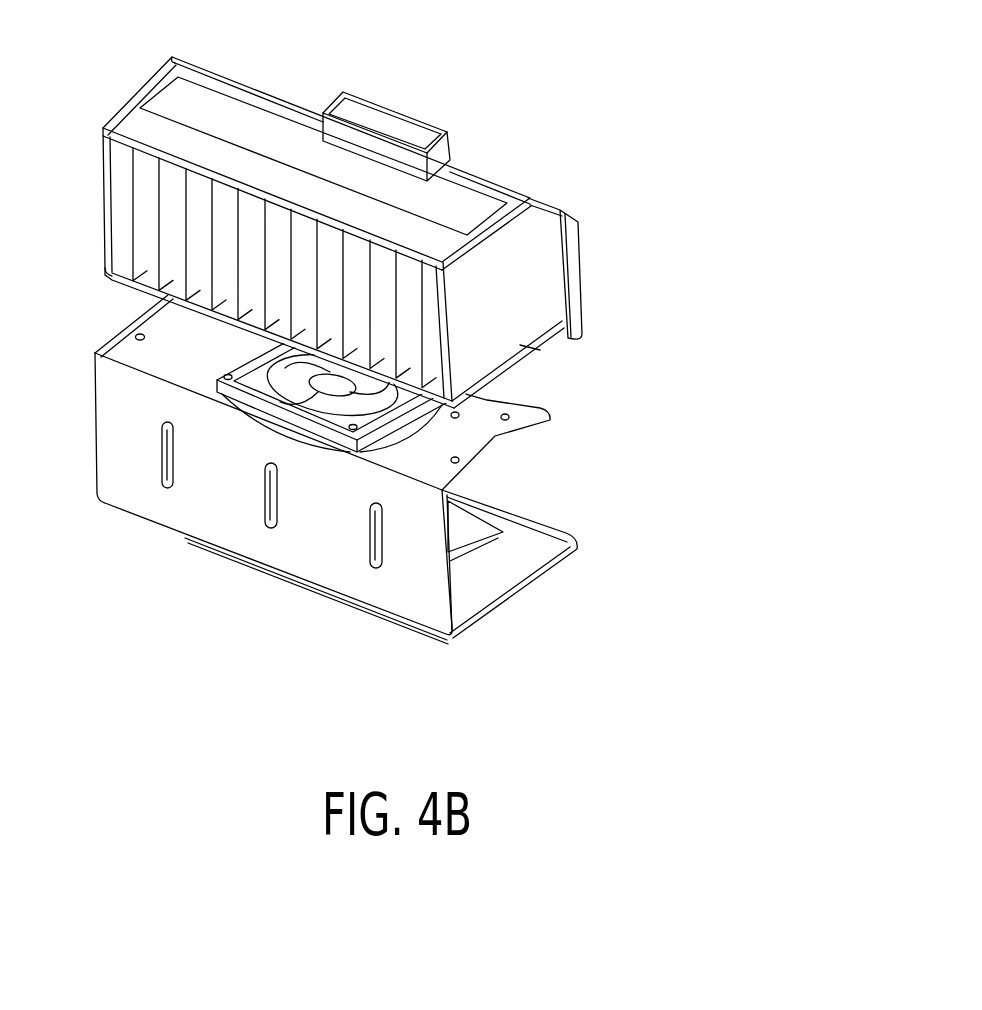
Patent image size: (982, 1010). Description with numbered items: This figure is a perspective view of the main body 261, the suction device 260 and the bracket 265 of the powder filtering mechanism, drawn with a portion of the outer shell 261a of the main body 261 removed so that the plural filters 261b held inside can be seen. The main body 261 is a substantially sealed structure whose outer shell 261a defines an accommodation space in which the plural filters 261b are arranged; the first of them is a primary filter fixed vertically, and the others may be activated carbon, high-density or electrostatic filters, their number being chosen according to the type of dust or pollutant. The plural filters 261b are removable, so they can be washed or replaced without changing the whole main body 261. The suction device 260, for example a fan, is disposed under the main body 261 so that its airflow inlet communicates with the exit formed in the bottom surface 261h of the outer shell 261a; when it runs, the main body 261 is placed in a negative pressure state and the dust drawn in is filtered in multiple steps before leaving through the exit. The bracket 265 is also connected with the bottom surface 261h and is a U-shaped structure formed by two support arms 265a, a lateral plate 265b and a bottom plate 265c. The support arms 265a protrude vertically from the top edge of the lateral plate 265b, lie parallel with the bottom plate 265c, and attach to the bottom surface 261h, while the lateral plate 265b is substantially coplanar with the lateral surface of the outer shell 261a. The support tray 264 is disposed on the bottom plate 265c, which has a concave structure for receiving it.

The suction device 260 is at (347, 430).
The main body 261 is at (396, 210).
The outer shell 261a is at (563, 210).
The plural filters 261b is at (258, 173).
The bottom surface 261h is at (530, 352).
The support tray 264 is at (470, 543).
The bracket 265 is at (436, 469).
The support arms 265a is at (527, 404).
The lateral plate 265b is at (417, 600).
The bottom plate 265c is at (547, 551).